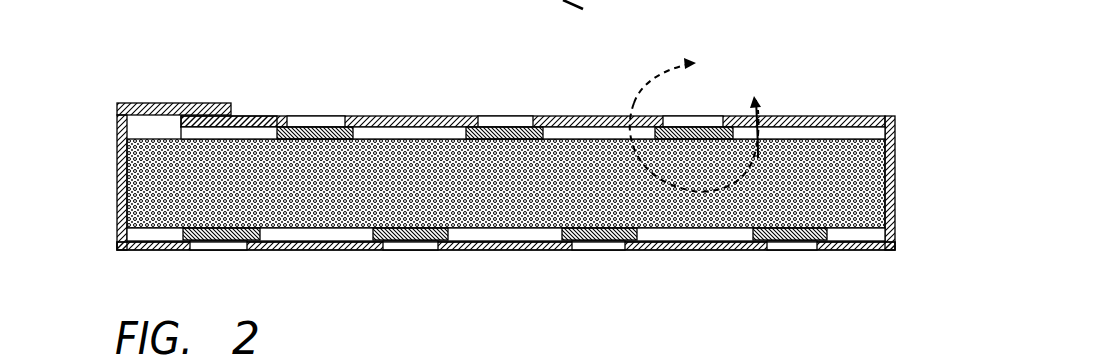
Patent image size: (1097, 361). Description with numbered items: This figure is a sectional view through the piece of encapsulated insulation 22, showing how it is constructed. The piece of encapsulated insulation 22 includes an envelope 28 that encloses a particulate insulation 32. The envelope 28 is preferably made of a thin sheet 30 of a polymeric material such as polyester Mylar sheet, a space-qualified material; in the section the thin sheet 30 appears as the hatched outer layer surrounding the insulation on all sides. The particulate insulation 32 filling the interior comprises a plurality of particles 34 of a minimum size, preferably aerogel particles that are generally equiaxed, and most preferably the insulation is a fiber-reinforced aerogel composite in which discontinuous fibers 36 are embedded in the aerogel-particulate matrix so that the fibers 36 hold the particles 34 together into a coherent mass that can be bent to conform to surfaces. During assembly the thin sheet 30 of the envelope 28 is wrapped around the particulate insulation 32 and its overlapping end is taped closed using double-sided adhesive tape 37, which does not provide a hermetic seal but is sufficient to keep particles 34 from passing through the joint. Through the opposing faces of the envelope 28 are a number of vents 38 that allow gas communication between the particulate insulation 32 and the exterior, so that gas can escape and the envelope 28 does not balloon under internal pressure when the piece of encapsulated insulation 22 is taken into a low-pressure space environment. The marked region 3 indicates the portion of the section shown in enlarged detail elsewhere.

The piece of encapsulated insulation 22 is at (150, 77).
The envelope 28 is at (654, 258).
The thin sheet 30 is at (585, 116).
The particulate insulation 32 is at (757, 242).
The particles 34 is at (822, 140).
The fibers 36 is at (838, 224).
The double-sided adhesive tape 37 is at (235, 116).
The vents 38 is at (331, 116).
The detail view indicator 3 is at (695, 125).